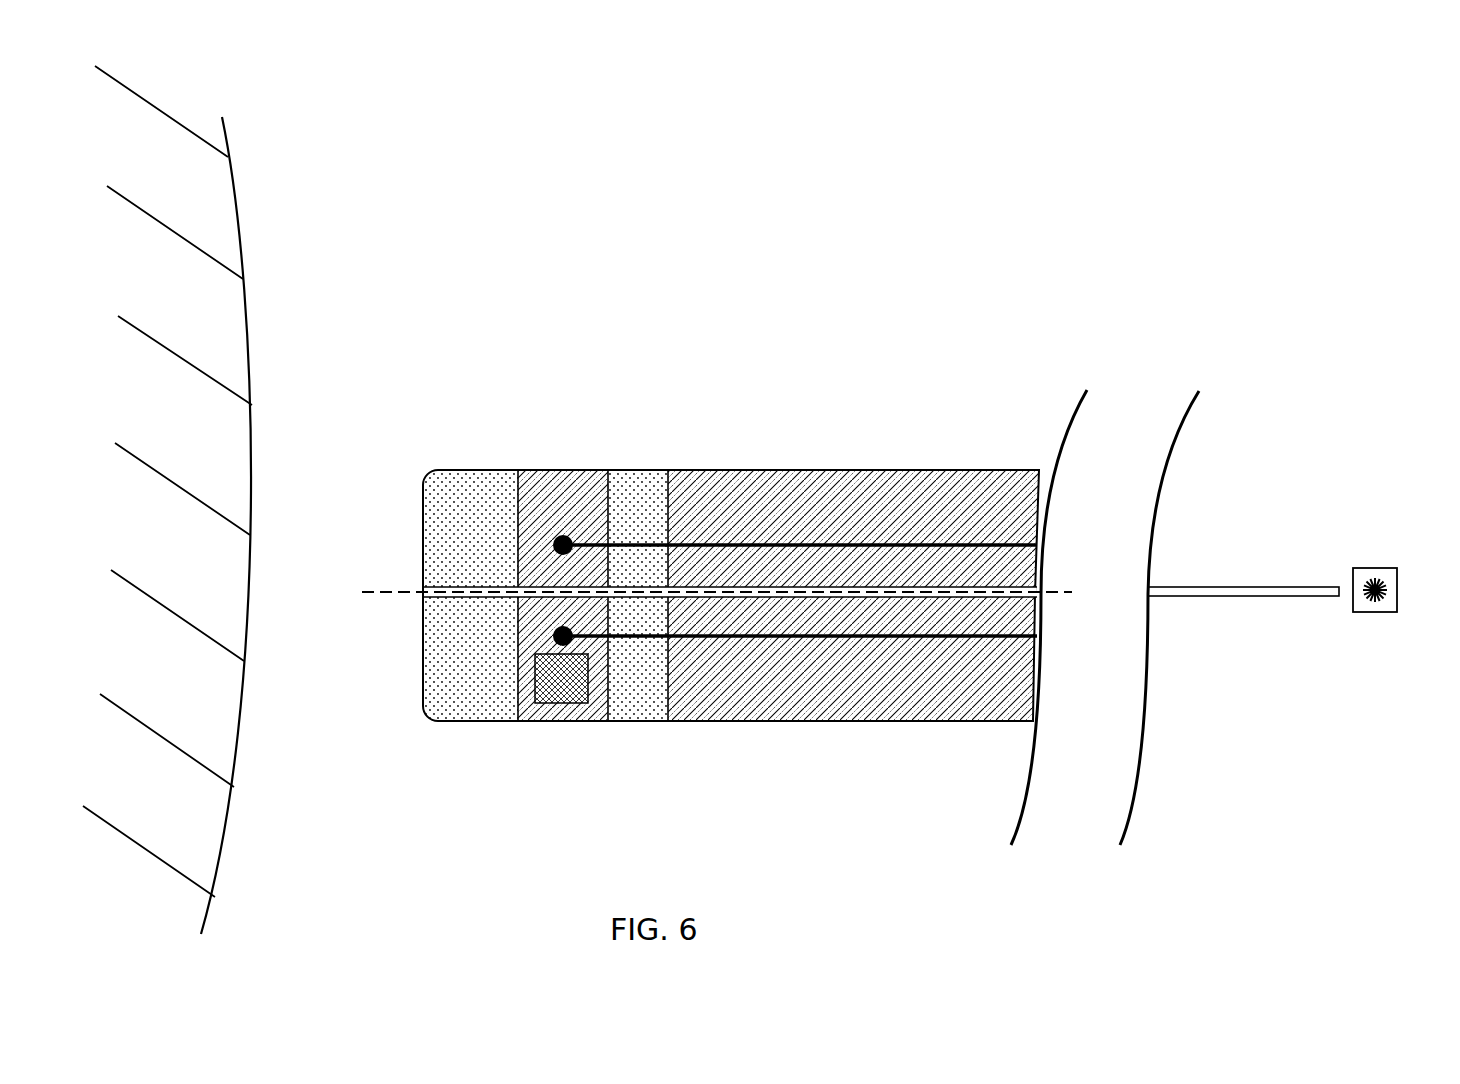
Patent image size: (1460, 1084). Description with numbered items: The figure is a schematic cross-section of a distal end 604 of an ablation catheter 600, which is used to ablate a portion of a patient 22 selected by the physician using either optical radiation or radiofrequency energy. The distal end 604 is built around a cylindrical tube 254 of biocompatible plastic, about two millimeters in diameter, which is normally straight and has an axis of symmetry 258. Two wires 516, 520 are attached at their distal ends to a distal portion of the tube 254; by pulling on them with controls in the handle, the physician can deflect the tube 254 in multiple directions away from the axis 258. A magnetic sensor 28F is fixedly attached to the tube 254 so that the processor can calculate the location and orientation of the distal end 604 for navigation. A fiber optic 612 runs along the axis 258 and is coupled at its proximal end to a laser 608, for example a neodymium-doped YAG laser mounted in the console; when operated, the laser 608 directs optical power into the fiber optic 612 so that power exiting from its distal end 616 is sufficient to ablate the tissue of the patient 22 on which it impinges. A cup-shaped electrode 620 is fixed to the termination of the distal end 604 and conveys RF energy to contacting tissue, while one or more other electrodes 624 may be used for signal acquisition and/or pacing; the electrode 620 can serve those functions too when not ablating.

The patient 22 is at (252, 466).
The cylindrical tube 254 is at (807, 721).
The axis of symmetry 258 is at (1057, 594).
The wire 516 is at (872, 636).
The wire 520 is at (920, 545).
The ablation catheter 600 is at (400, 813).
The distal end 604 is at (542, 838).
The laser 608 is at (1375, 612).
The fiber optic 612 is at (733, 588).
The distal end of the fiber optic 616 is at (423, 590).
The electrode 620 is at (483, 470).
The other electrodes 624 is at (633, 470).
The magnetic sensor 28F is at (550, 703).